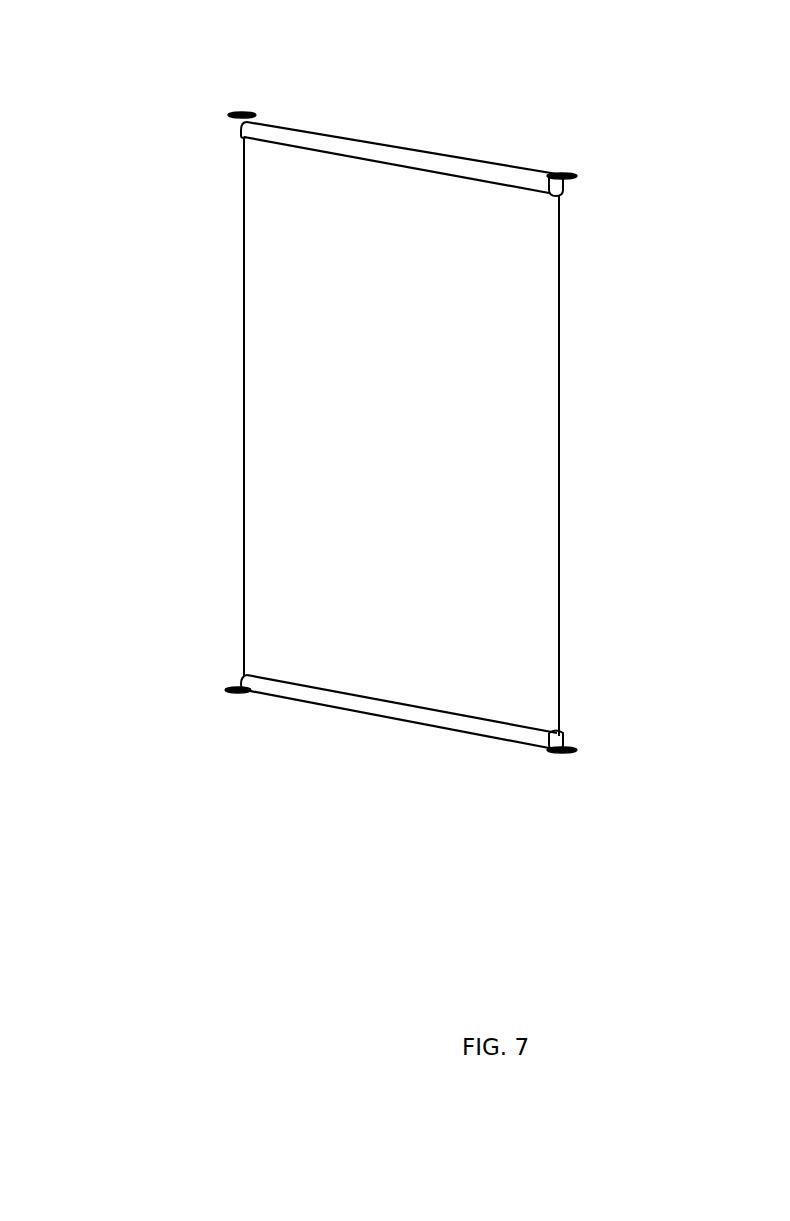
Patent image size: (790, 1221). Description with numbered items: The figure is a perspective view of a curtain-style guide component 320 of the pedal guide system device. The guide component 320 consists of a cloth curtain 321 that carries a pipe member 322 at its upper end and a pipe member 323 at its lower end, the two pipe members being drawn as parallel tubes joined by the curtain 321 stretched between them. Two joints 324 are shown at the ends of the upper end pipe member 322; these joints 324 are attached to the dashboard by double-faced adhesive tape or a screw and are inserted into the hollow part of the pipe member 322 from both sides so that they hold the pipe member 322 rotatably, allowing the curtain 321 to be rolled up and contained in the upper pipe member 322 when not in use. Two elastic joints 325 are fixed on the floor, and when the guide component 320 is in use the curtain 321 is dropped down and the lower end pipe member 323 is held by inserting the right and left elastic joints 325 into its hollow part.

The guide component 320 is at (147, 118).
The cloth curtain 321 is at (530, 453).
The upper end pipe member 322 is at (410, 157).
The lower end pipe member 323 is at (380, 710).
The joint 324 is at (243, 115).
The elastic joint 325 is at (232, 692).